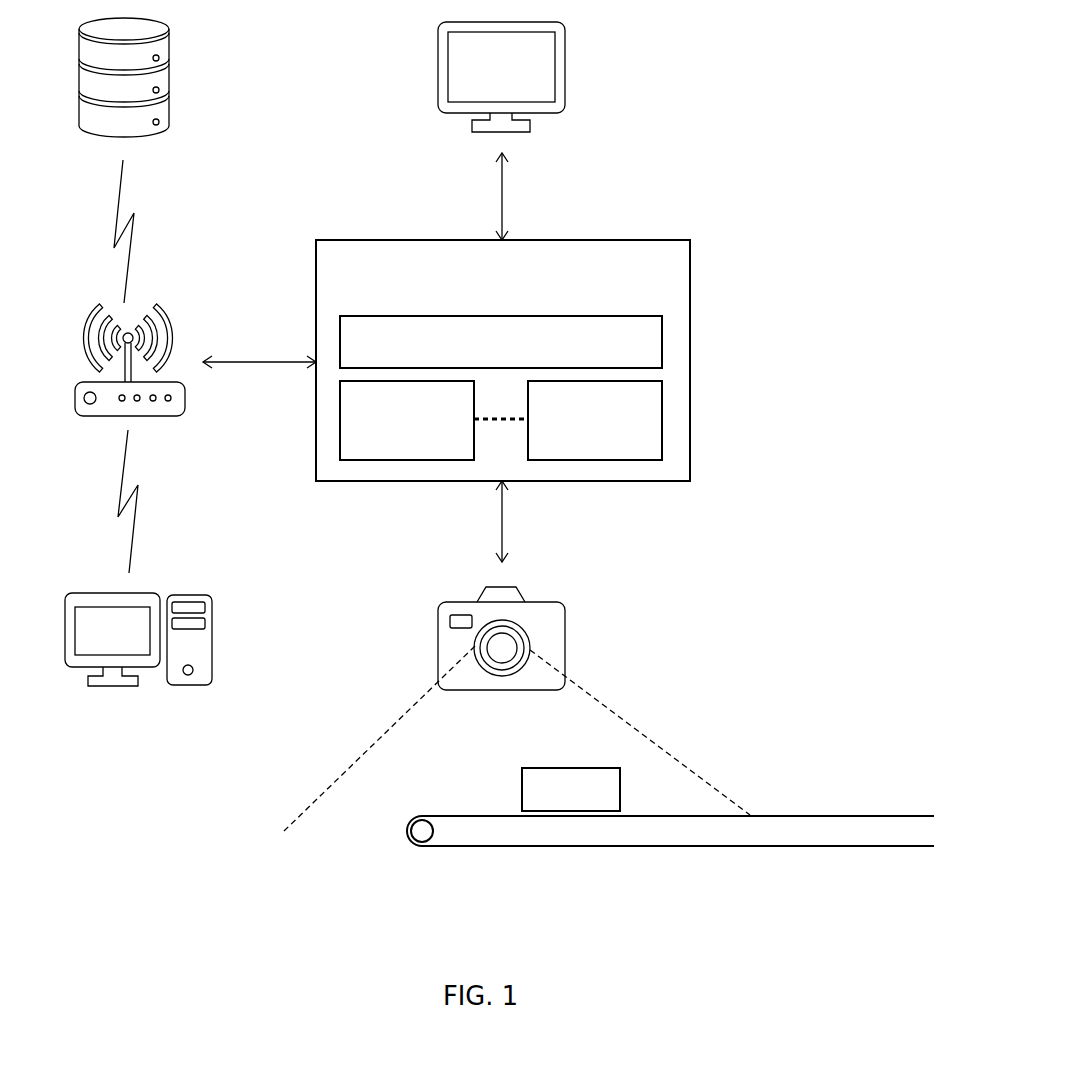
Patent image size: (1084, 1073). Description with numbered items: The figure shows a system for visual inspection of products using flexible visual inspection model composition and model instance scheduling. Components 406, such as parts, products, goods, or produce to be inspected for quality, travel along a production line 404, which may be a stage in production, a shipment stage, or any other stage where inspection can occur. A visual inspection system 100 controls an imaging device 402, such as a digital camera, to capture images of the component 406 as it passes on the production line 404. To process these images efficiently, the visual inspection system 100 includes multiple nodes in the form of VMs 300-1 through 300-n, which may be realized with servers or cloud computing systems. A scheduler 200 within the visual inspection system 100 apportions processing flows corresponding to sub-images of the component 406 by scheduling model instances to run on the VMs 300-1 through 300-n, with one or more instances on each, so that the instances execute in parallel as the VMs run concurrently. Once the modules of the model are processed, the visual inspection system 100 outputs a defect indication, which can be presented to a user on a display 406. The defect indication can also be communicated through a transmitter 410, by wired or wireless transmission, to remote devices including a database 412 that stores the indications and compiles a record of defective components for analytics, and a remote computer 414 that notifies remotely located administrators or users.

The visual inspection system 100 is at (523, 306).
The scheduler 200 is at (588, 356).
The VM 300-1 is at (438, 447).
The VM 300-n is at (627, 447).
The imaging device 402 is at (590, 637).
The production line 404 is at (630, 860).
The component 406 is at (588, 72).
The transmitter 410 is at (180, 306).
The database 412 is at (206, 76).
The remote computer 414 is at (225, 636).